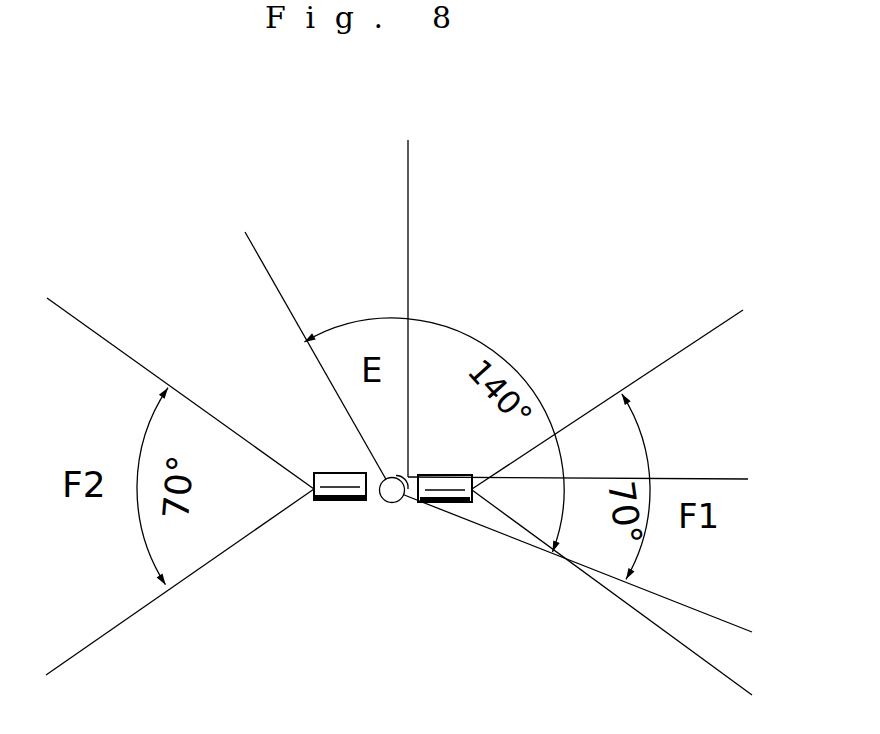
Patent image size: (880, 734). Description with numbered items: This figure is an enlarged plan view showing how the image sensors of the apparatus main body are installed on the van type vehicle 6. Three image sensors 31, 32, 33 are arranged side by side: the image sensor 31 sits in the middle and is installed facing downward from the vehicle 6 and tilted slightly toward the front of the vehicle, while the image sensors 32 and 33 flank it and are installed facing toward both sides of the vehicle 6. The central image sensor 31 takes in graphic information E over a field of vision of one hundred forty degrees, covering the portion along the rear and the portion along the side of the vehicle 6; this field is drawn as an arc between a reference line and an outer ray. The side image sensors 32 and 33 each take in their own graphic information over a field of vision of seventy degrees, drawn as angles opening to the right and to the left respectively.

The vehicle 6 is at (406, 217).
The image sensor 31 is at (393, 501).
The image sensor 32 is at (453, 502).
The image sensor 33 is at (335, 500).